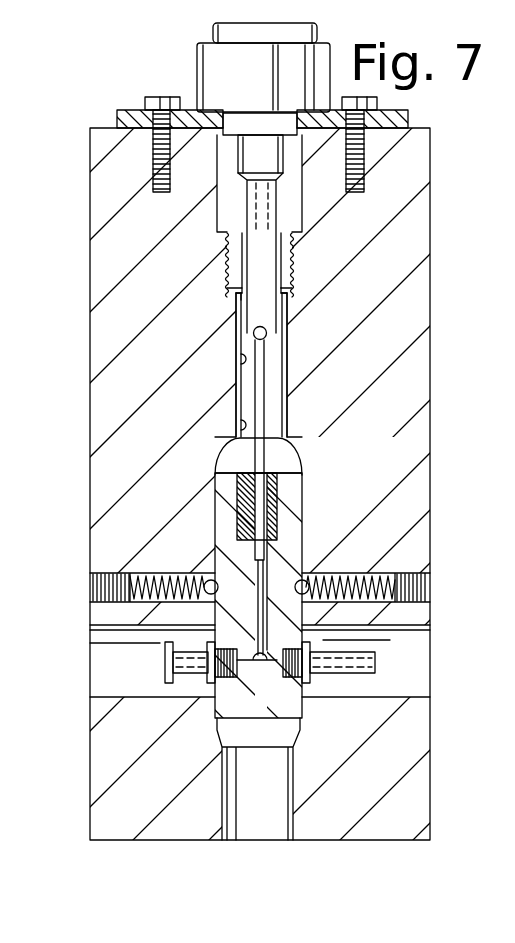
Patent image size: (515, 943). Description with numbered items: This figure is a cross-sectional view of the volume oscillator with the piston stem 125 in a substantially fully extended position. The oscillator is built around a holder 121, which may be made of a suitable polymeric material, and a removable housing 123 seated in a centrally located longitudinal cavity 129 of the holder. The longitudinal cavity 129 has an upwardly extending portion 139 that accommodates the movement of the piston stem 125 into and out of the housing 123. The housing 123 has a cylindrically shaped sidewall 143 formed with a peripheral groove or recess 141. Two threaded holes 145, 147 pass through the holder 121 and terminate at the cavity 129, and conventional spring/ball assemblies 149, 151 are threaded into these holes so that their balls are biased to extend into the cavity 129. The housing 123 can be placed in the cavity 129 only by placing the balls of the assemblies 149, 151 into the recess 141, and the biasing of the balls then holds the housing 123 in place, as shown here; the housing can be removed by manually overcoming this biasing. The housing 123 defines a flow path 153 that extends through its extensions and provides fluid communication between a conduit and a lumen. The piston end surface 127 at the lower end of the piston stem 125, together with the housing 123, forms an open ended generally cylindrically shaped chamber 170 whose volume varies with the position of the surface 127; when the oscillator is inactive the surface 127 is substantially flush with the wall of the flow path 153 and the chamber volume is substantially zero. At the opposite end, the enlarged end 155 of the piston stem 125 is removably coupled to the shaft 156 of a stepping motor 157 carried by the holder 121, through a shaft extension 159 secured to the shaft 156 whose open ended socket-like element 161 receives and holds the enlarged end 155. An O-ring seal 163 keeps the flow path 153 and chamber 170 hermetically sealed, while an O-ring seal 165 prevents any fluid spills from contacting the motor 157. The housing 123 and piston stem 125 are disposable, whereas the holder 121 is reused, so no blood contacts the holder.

The holder 121 is at (110, 327).
The housing 123 is at (238, 474).
The piston stem 125 is at (287, 397).
The piston end surface 127 is at (265, 559).
The longitudinal cavity 129 is at (240, 427).
The upwardly extending portion 139 is at (242, 375).
The peripheral groove or recess 141 is at (355, 626).
The cylindrically shaped sidewall 143 is at (308, 500).
The threaded hole 145 is at (90, 595).
The threaded hole 147 is at (425, 587).
The spring/ball assembly 149 is at (117, 573).
The spring/ball assembly 151 is at (402, 568).
The flow path 153 is at (313, 697).
The enlarged end 155 is at (237, 318).
The shaft 156 is at (262, 200).
The stepping motor 157 is at (210, 63).
The shaft extension 159 is at (262, 283).
The socket-like element 161 is at (289, 319).
The O-ring seal 163 is at (215, 543).
The O-ring seal 165 is at (282, 297).
The chamber 170 is at (216, 616).